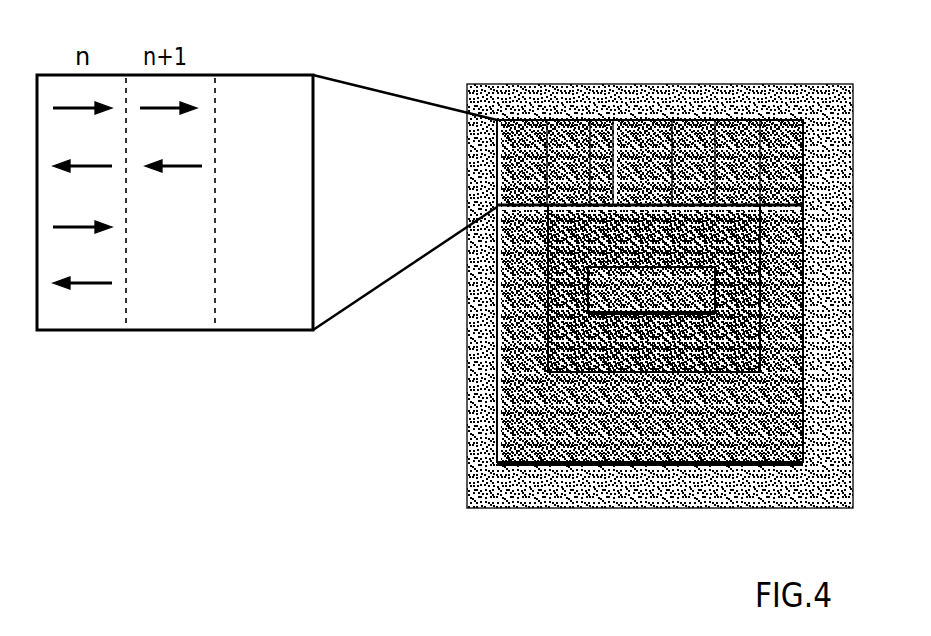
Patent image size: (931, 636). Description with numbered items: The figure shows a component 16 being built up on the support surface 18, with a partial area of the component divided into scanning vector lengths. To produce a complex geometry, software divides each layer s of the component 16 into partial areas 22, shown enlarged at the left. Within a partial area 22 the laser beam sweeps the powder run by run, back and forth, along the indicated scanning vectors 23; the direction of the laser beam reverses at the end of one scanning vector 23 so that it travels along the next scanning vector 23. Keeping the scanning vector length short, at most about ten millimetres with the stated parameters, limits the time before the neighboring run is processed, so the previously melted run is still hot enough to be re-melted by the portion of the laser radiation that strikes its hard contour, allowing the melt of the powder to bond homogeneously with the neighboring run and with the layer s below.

The component 16 is at (270, 74).
The support surface 18 is at (553, 490).
The partial areas 22 is at (250, 306).
The scanning vectors 23 is at (177, 170).
The layer s is at (480, 373).